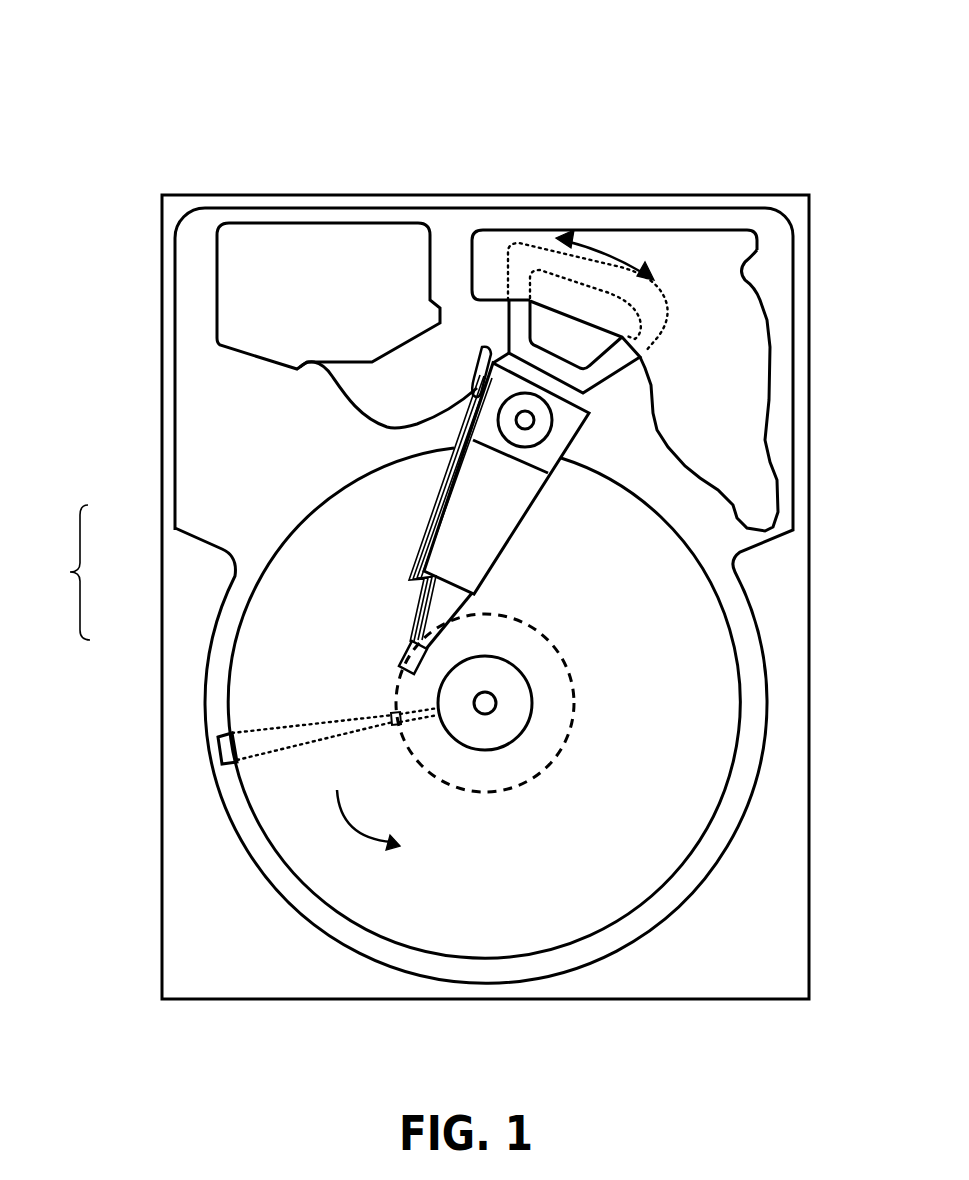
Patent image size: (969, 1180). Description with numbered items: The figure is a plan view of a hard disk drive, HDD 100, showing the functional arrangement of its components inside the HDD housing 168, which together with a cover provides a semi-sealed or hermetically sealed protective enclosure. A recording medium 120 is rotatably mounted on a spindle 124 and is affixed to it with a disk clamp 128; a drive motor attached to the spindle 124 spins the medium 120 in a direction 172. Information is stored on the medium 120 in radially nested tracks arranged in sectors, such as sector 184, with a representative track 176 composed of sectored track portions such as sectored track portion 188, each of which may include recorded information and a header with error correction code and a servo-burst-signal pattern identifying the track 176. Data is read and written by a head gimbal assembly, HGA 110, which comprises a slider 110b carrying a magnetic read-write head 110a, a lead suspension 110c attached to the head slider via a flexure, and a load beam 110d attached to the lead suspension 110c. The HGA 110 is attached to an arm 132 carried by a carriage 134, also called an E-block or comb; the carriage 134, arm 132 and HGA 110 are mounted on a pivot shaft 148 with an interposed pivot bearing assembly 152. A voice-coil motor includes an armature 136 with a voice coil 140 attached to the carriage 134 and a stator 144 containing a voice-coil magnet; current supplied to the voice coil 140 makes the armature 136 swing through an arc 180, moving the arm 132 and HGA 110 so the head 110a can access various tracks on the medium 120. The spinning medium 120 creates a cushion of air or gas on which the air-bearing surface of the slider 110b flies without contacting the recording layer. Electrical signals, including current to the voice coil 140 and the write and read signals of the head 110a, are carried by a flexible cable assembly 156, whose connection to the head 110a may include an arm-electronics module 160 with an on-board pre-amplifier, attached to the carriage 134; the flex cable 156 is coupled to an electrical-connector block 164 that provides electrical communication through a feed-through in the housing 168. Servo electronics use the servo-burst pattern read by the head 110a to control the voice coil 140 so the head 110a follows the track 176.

The hard disk drive 100 is at (93, 79).
The head gimbal assembly 110 is at (259, 524).
The magnetic read-write head 110a is at (412, 645).
The slider 110b is at (440, 597).
The lead suspension 110c is at (430, 584).
The load beam 110d is at (410, 572).
The recording medium 120 is at (668, 655).
The spindle 124 is at (496, 703).
The disk clamp 128 is at (510, 725).
The arm 132 is at (478, 537).
The carriage 134 is at (545, 455).
The armature 136 is at (503, 337).
The voice coil 140 is at (520, 313).
The stator 144 is at (737, 322).
The pivot shaft 148 is at (533, 420).
The pivot bearing assembly 152 is at (547, 437).
The flexible cable assembly 156 is at (343, 398).
The arm-electronics module 160 is at (482, 386).
The electrical-connector block 164 is at (243, 295).
The HDD housing 168 is at (792, 206).
The direction 172 is at (393, 819).
The track 176 is at (563, 667).
The arc 180 is at (606, 243).
The sector 184 is at (215, 750).
The sectored track portion 188 is at (387, 718).